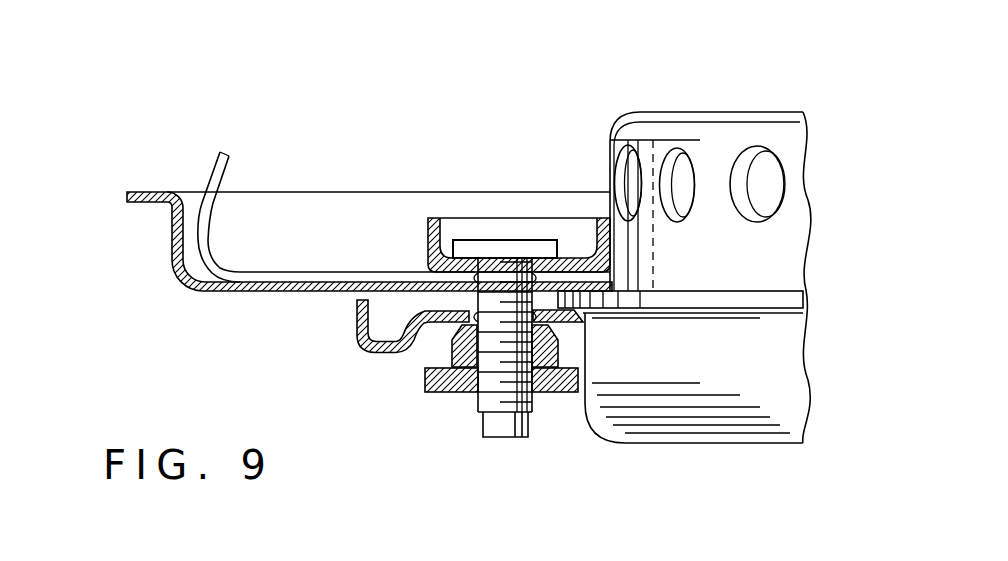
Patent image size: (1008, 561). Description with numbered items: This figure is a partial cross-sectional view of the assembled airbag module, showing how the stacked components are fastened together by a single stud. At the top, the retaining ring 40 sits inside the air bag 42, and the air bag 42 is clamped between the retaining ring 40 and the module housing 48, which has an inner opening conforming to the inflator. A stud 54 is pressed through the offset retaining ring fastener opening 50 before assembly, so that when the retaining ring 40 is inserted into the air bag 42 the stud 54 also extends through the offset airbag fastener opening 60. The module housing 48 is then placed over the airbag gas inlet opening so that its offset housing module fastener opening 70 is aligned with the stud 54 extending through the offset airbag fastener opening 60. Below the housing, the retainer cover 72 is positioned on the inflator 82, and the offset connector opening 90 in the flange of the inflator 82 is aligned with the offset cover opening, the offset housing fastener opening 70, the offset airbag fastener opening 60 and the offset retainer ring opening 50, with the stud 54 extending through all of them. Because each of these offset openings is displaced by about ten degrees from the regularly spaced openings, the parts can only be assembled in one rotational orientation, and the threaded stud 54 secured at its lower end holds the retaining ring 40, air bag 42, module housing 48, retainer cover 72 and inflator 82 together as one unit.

The retaining ring 40 is at (430, 218).
The air bag 42 is at (221, 172).
The module housing 48 is at (158, 230).
The offset retaining ring fastener opening 50 is at (522, 260).
The stud 54 is at (492, 424).
The offset airbag fastener opening 60 is at (470, 278).
The offset housing module fastener opening 70 is at (548, 302).
The retainer cover 72 is at (566, 395).
The inflator 82 is at (723, 125).
The offset connector opening 90 is at (450, 357).